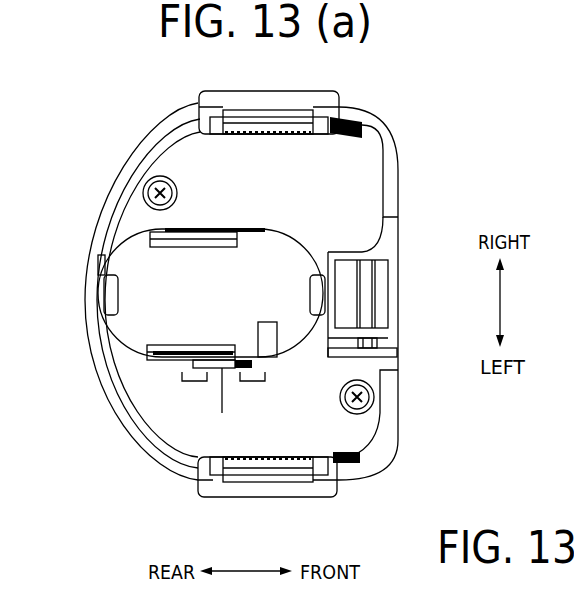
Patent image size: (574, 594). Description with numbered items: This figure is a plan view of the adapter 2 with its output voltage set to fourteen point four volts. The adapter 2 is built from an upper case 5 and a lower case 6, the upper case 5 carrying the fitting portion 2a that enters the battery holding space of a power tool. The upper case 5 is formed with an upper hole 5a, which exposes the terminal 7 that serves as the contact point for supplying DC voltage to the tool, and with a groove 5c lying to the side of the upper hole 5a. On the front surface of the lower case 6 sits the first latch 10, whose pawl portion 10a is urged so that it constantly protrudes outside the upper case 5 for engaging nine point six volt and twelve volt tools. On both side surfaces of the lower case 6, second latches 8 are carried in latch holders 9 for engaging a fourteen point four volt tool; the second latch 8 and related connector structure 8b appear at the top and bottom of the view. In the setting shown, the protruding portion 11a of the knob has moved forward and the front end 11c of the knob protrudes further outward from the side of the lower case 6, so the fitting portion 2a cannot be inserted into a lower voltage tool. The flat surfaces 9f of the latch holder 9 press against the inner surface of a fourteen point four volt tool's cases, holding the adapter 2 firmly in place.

The adapter 2 is at (168, 163).
The fitting portion 2a is at (225, 252).
The upper case 5 is at (97, 298).
The upper hole 5a is at (147, 231).
The groove 5c is at (270, 347).
The lower case 6 is at (398, 422).
The terminal 7 is at (165, 227).
The second latch 8 is at (287, 115).
The connector terminal block 8b is at (261, 110).
The latch holder 9 is at (218, 92).
The flat surface 9f is at (347, 465).
The first latch 10 is at (378, 272).
The pawl portion 10a is at (388, 290).
The protruding portion 11a is at (197, 366).
The front end 11c is at (400, 352).